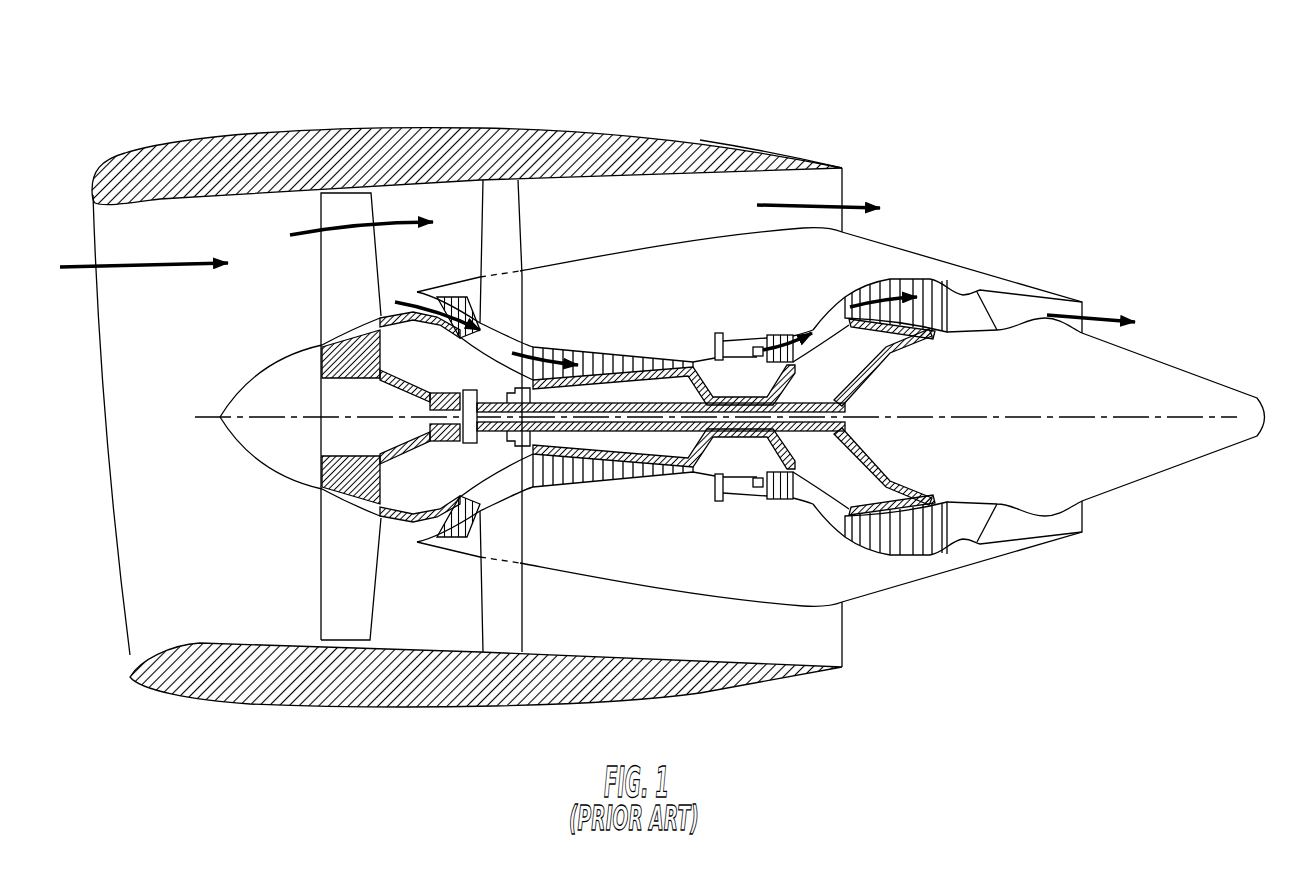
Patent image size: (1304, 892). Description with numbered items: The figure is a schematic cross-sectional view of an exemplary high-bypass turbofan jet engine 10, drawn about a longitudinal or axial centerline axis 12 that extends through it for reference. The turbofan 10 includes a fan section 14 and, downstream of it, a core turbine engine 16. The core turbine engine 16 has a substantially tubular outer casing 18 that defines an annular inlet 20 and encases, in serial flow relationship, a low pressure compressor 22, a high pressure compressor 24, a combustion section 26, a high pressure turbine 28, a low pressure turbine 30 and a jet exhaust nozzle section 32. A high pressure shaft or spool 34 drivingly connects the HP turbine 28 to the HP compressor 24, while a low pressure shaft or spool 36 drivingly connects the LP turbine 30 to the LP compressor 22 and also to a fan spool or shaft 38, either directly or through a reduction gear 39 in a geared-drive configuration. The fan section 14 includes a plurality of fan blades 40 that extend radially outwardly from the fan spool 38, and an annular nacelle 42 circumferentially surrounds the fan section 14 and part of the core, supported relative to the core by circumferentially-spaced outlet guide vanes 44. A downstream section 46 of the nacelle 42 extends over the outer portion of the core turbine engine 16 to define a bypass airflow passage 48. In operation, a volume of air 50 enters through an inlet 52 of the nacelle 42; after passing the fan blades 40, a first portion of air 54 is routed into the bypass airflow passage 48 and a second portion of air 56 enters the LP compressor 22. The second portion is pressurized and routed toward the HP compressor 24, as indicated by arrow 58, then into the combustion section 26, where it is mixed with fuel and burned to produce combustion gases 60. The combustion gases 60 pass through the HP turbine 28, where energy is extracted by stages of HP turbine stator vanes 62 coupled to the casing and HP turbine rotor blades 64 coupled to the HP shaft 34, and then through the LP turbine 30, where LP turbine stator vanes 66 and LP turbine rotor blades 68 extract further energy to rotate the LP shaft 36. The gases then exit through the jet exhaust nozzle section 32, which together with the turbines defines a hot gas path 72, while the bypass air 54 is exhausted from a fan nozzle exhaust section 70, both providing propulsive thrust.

The high-bypass turbofan jet engine 10 is at (995, 155).
The longitudinal or axial centerline axis 12 is at (1033, 410).
The fan section 14 is at (362, 100).
The core turbine engine 16 is at (690, 300).
The outer casing 18 is at (693, 593).
The annular inlet 20 is at (423, 530).
The low pressure compressor 22 is at (483, 500).
The high pressure compressor 24 is at (557, 497).
The combustion section 26 is at (737, 483).
The high pressure turbine 28 is at (800, 493).
The low pressure turbine 30 is at (932, 552).
The jet exhaust nozzle section 32 is at (1003, 527).
The high pressure shaft or spool 34 is at (780, 367).
The low pressure shaft or spool 36 is at (487, 390).
The fan spool or shaft 38 is at (383, 380).
The reduction gear 39 is at (473, 443).
The fan blades 40 is at (320, 580).
The nacelle 42 is at (363, 707).
The outlet guide vanes 44 is at (522, 223).
The downstream section of the nacelle 46 is at (748, 147).
The bypass airflow passage 48 is at (664, 218).
The volume of air 50 is at (167, 260).
The inlet 52 is at (128, 652).
The first portion of air 54 is at (333, 227).
The second portion of air 56 is at (407, 300).
The second portion of air routed toward the HP compressor 58 is at (543, 347).
The combustion gases 60 is at (870, 285).
The HP turbine stator vanes 62 is at (753, 489).
The HP turbine rotor blades 64 is at (820, 463).
The LP turbine stator vanes 66 is at (847, 537).
The LP turbine rotor blades 68 is at (860, 558).
The fan nozzle exhaust section 70 is at (827, 188).
The hot gas path 72 is at (832, 312).